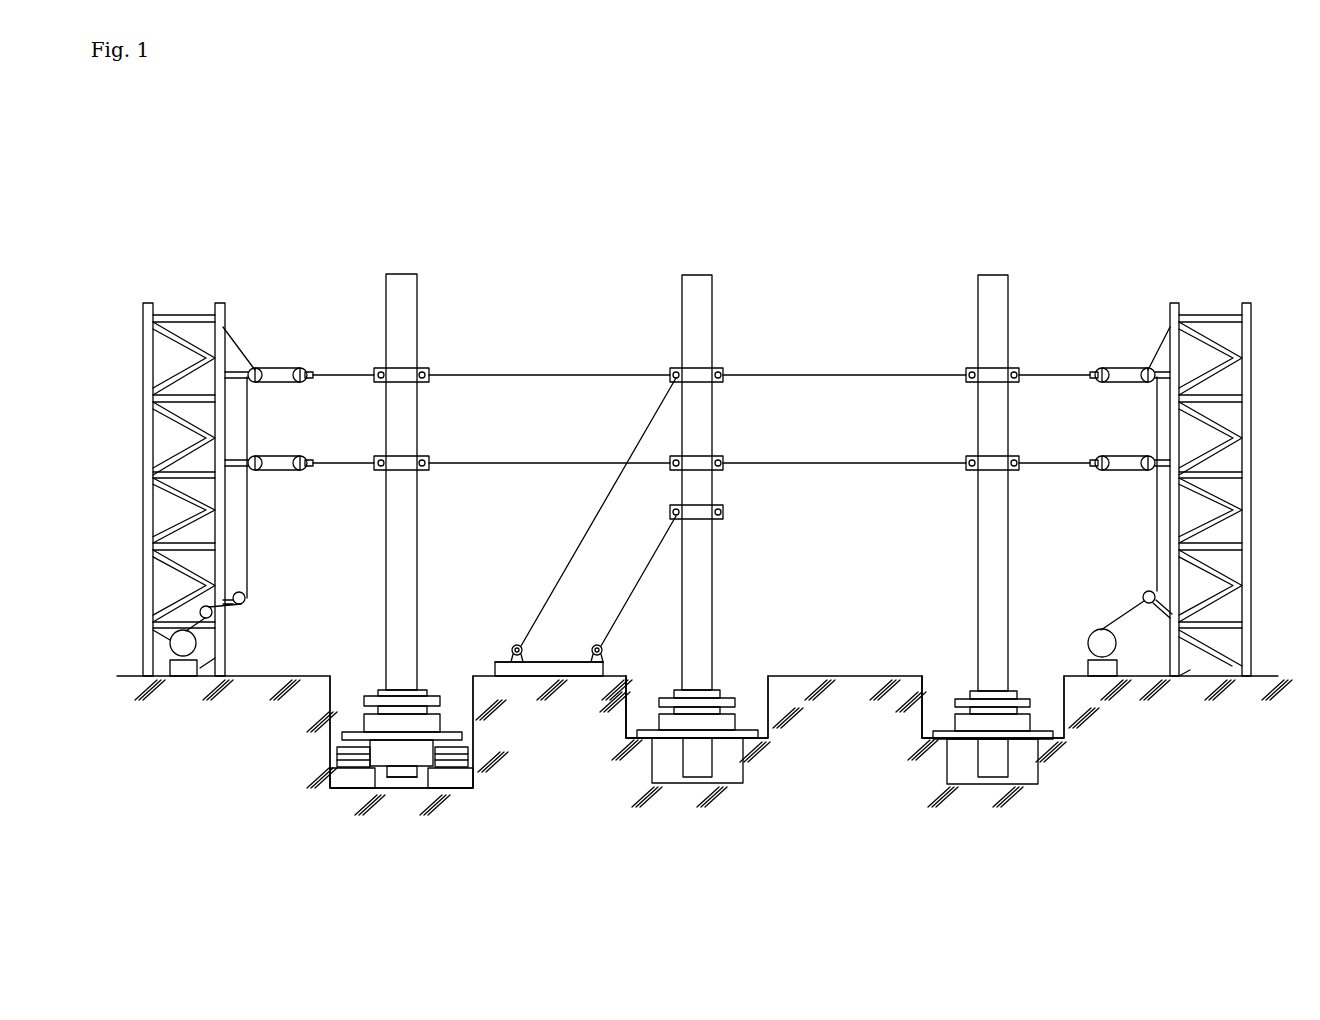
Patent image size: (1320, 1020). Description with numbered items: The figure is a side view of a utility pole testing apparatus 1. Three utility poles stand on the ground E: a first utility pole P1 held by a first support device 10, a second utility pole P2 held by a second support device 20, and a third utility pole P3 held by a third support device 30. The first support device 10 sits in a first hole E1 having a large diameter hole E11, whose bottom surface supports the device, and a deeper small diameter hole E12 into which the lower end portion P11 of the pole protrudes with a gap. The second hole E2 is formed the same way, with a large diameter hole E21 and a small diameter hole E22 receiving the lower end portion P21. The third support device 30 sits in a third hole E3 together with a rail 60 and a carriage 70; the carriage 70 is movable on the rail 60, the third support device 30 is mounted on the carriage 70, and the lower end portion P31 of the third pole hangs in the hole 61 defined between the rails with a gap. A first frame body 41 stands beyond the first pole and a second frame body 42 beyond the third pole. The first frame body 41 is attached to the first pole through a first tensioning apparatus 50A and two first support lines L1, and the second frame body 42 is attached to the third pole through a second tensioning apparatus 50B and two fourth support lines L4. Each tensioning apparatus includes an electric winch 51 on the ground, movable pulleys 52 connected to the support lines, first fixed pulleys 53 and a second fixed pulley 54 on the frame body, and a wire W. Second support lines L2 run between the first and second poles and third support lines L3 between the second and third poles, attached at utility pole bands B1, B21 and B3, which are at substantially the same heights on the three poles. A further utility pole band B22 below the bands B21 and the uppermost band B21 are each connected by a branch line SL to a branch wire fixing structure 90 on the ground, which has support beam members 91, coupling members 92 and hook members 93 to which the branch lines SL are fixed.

The utility pole testing apparatus 1 is at (1088, 172).
The first support device 10 is at (1033, 722).
The second support device 20 is at (740, 722).
The third support device 30 is at (446, 722).
The first frame body 41 is at (1210, 313).
The second frame body 42 is at (183, 313).
The first tensioning apparatus 50A is at (1116, 490).
The second tensioning apparatus 50B is at (277, 489).
The electric winch 51 is at (166, 652).
The movable pulley 52 is at (300, 456).
The first fixed pulley 53 is at (258, 456).
The second fixed pulley 54 is at (212, 615).
The rail 60 is at (330, 776).
The hole 61 is at (420, 790).
The carriage 70 is at (342, 738).
The branch wire fixing structure 90 is at (555, 641).
The support beam member 91 is at (556, 662).
The coupling member 92 is at (603, 669).
The hook member 93 is at (515, 645).
The utility pole band B1 is at (972, 455).
The utility pole band B21 is at (718, 455).
The utility pole band B22 is at (724, 512).
The utility pole band B3 is at (422, 455).
The ground E is at (846, 676).
The first hole E1 is at (972, 845).
The large diameter hole E11 is at (922, 685).
The small diameter hole E12 is at (964, 777).
The second hole E2 is at (677, 845).
The large diameter hole E21 is at (626, 685).
The small diameter hole E22 is at (668, 776).
The third hole E3 is at (330, 690).
The first support line L1 is at (1048, 456).
The second support line L2 is at (843, 456).
The third support line L3 is at (553, 456).
The fourth support line L4 is at (343, 456).
The first utility pole P1 is at (993, 273).
The second utility pole P2 is at (698, 273).
The third utility pole P3 is at (401, 272).
The lower end portion P11 is at (1003, 778).
The lower end portion P21 is at (707, 778).
The lower end portion P31 is at (398, 790).
The branch line SL is at (585, 578).
The wire W is at (240, 346).